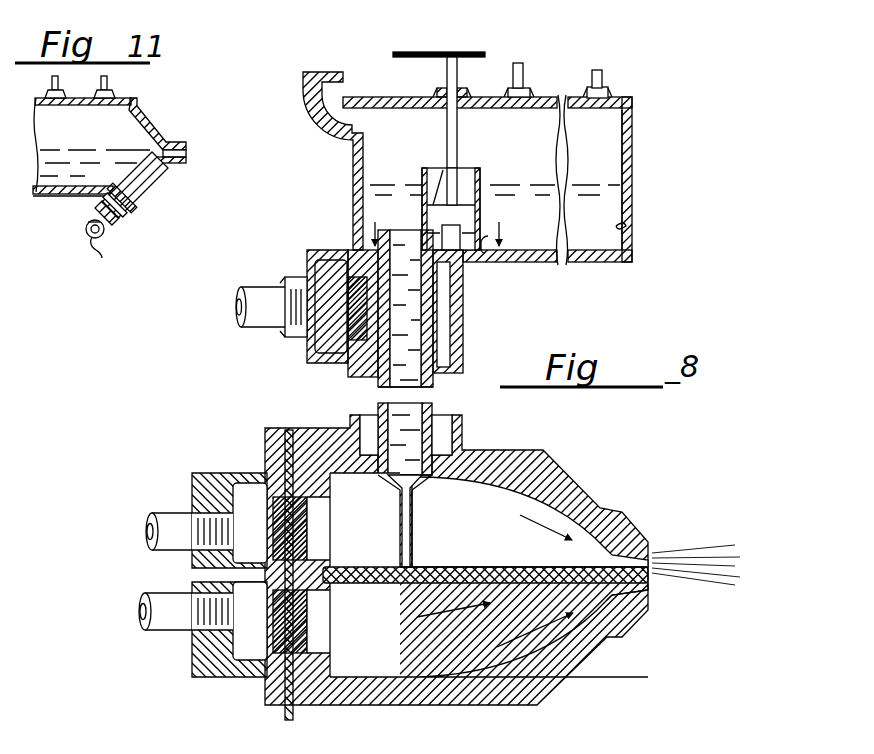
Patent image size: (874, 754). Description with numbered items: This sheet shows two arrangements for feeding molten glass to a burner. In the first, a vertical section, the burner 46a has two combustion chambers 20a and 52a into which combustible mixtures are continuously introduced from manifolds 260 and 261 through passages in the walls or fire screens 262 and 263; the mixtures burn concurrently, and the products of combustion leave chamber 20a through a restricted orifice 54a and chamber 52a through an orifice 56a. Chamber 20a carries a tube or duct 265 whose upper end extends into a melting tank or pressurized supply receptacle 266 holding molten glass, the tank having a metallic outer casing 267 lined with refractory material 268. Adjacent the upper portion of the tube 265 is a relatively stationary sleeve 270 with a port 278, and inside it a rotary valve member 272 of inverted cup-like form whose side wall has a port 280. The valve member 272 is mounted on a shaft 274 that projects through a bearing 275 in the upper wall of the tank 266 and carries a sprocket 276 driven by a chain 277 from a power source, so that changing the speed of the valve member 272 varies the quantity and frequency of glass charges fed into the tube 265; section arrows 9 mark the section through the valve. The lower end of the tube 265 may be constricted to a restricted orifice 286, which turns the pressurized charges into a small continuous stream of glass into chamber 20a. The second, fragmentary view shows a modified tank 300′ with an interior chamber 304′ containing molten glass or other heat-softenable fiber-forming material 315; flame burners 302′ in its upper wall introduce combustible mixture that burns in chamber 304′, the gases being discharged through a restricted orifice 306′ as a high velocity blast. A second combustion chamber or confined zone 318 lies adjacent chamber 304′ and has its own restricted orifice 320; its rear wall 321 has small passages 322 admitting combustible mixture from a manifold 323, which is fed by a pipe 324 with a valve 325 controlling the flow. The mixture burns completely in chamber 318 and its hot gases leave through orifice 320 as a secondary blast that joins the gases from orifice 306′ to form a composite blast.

In FIG. 8, the section line 9- 9 is at (436, 225).
In FIG. 8, the combustion chamber 20a is at (477, 520).
In FIG. 8, the burner 46a is at (574, 674).
In FIG. 8, the combustion chamber 52a is at (477, 630).
In FIG. 8, the restricted orifice 54a is at (650, 556).
In FIG. 8, the orifice 56a is at (650, 582).
In FIG. 8, the manifold 260 is at (248, 498).
In FIG. 8, the manifold 261 is at (252, 648).
In FIG. 8, the fire screen 262 is at (308, 522).
In FIG. 8, the fire screen 263 is at (308, 620).
In FIG. 8, the tube 265 is at (428, 405).
In FIG. 8, the melting tank 266 is at (636, 165).
In FIG. 8, the metallic outer casing 267 is at (632, 205).
In FIG. 8, the refractory material 268 is at (626, 226).
In FIG. 8, the stationary sleeve 270 is at (478, 170).
In FIG. 8, the rotary valve member 272 is at (445, 170).
In FIG. 8, the shaft 274 is at (458, 125).
In FIG. 8, the bearing 275 is at (444, 105).
In FIG. 8, the sprocket 276 is at (463, 53).
In FIG. 8, the chain 277 is at (403, 53).
In FIG. 8, the port 278 is at (485, 253).
In FIG. 8, the port 280 is at (468, 212).
In FIG. 8, the restricted orifice 286 is at (412, 492).
In FIG. 11, the tank 300′ is at (45, 194).
In FIG. 11, the flame burners 302′ is at (58, 93).
In FIG. 11, the interior chamber 304′ is at (437, 377).
In FIG. 11, the restricted orifice 306′ is at (187, 147).
In FIG. 11, the fiber-forming material 315 is at (82, 172).
In FIG. 11, the second combustion chamber 318 is at (160, 180).
In FIG. 11, the restricted orifice 320 is at (187, 161).
In FIG. 11, the rear wall 321 is at (124, 193).
In FIG. 11, the small passages 322 is at (118, 204).
In FIG. 11, the manifold 323 is at (110, 217).
In FIG. 11, the pipe 324 is at (102, 232).
In FIG. 11, the valve 325 is at (102, 258).